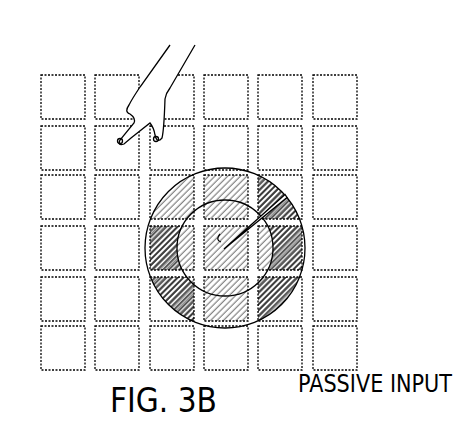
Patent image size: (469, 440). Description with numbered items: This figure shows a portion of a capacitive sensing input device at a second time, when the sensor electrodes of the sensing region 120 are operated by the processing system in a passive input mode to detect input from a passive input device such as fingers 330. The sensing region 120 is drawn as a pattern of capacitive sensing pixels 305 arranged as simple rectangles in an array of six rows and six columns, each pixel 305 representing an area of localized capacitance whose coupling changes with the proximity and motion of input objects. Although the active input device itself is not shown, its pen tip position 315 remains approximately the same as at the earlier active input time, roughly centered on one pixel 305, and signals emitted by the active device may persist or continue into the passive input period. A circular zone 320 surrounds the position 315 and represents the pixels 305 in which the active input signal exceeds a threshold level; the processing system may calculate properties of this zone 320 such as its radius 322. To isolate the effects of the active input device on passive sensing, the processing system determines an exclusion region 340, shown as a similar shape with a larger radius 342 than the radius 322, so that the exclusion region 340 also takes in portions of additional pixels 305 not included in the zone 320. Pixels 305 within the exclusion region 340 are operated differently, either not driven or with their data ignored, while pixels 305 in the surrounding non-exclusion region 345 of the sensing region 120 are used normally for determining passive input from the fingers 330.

The sensing region 120 is at (315, 61).
The capacitive sensing pixels 305 is at (245, 222).
The non-exclusion region 345 is at (369, 120).
The fingers 330 is at (155, 68).
The position 315 is at (251, 222).
The radius 322 is at (243, 223).
The zone 320 is at (266, 273).
The exclusion region 340 is at (257, 327).
The radius 342 is at (226, 294).